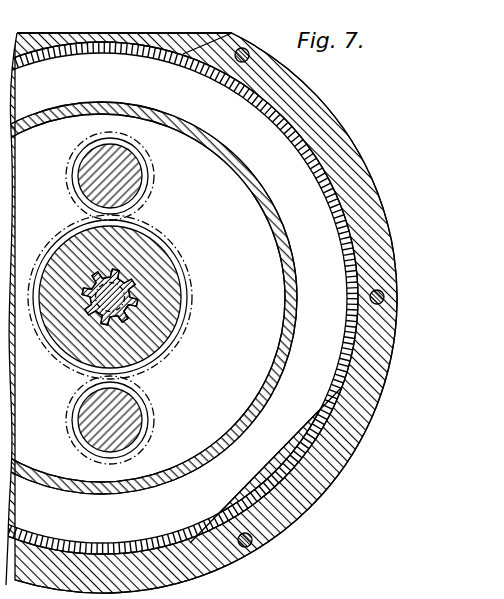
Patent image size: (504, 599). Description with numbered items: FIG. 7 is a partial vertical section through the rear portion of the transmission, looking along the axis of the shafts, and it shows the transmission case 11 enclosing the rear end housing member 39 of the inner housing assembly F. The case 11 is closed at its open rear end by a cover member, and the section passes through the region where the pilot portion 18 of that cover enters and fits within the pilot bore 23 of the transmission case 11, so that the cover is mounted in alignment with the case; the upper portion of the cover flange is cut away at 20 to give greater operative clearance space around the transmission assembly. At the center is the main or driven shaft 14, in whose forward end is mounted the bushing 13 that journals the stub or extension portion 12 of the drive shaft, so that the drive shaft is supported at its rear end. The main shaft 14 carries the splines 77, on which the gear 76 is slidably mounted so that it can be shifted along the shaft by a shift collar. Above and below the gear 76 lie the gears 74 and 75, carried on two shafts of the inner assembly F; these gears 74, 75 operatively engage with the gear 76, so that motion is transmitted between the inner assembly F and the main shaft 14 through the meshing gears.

The transmission case 11 is at (318, 118).
The stub or extension portion 12 is at (127, 292).
The bushing 13 is at (133, 288).
The main or driven shaft 14 is at (138, 311).
The pilot portion 18 is at (236, 34).
The cut-away portion of flange 20 is at (156, 33).
The pilot bore 23 is at (284, 103).
The end housing member 39 is at (270, 193).
The gear 74 is at (153, 182).
The gear 75 is at (158, 412).
The gear 76 is at (192, 287).
The splines 77 is at (148, 326).
The inner housing assembly F is at (290, 233).